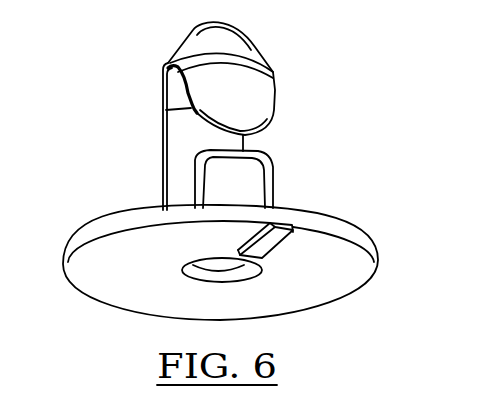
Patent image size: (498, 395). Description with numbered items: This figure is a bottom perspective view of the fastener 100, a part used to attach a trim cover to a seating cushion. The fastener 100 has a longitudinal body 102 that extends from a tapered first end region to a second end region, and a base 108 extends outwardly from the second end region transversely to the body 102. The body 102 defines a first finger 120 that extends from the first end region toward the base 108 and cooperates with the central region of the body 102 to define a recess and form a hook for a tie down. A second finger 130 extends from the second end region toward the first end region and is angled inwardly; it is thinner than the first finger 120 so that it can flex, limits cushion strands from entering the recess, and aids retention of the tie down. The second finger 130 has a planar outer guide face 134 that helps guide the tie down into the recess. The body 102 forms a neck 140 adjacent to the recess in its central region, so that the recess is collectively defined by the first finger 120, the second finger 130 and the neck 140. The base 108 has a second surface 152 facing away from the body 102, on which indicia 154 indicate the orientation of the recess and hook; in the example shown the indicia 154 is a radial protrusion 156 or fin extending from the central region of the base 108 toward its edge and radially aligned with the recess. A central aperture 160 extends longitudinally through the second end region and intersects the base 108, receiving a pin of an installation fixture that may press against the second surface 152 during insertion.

The fastener 100 is at (351, 50).
The body 102 is at (149, 121).
The base 108 is at (332, 222).
The first finger 120 is at (248, 102).
The second finger 130 is at (223, 178).
The outer guide face 134 is at (234, 179).
The neck 140 is at (187, 140).
The second surface 152 is at (321, 281).
The indicia 154 is at (280, 233).
The radial protrusion 156 is at (265, 240).
The central aperture 160 is at (188, 273).